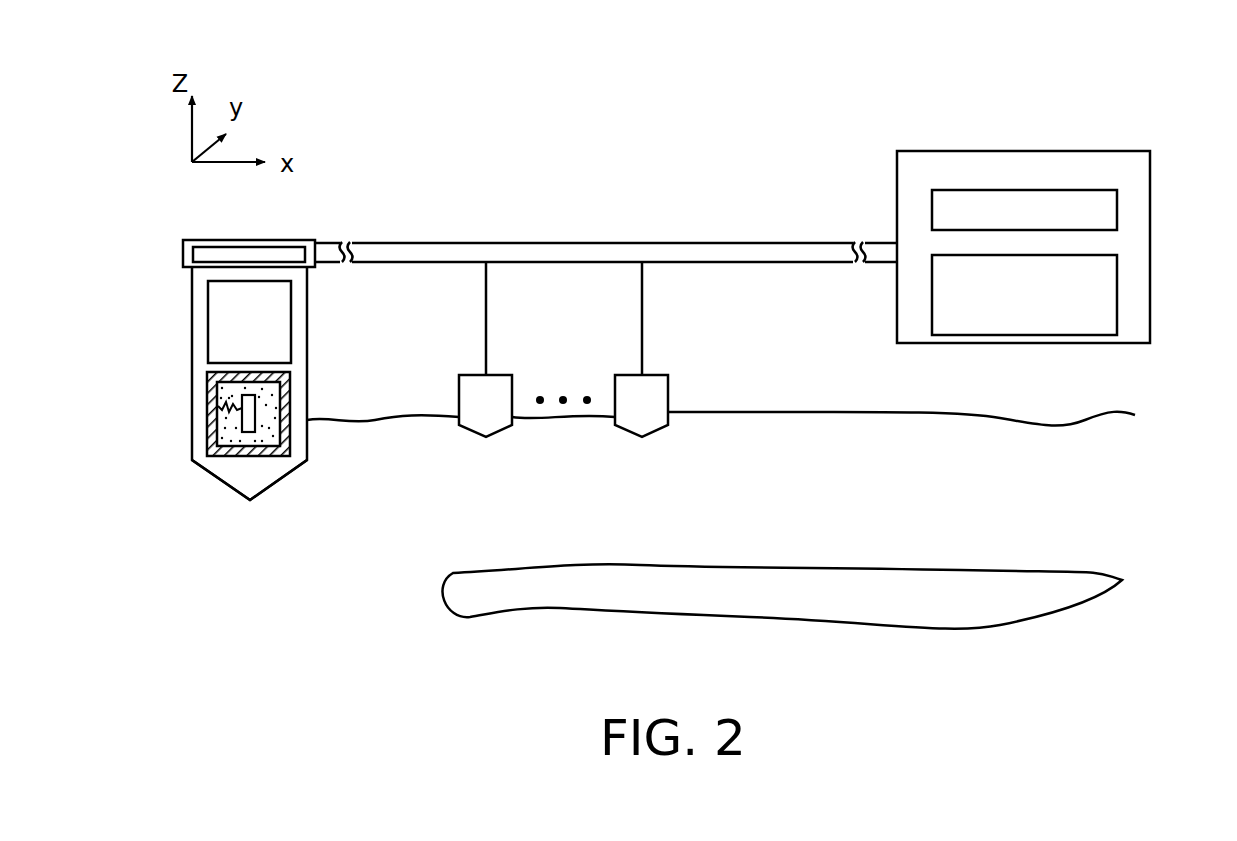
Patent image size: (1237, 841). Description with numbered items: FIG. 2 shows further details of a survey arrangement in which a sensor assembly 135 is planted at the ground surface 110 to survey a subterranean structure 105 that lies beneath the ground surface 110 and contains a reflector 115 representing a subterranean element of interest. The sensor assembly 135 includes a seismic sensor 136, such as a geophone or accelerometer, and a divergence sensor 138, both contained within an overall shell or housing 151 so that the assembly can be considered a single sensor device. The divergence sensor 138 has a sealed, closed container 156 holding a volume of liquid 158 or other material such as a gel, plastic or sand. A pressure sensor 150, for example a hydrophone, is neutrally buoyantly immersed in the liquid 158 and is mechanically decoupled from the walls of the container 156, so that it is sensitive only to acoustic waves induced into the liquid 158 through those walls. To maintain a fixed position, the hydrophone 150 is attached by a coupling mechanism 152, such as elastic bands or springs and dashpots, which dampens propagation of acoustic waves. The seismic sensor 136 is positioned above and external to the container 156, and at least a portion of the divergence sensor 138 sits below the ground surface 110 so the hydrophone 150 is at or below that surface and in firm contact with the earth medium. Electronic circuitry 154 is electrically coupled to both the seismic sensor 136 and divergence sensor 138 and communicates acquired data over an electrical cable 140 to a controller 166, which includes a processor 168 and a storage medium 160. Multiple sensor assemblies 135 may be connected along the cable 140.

The subterranean structure 105 is at (1147, 405).
The ground surface 110 is at (795, 412).
The reflector 115 is at (708, 604).
The sensor assembly 135 is at (180, 313).
The seismic sensor 136 is at (282, 315).
The divergence sensor 138 is at (300, 443).
The electrical cable 140 is at (600, 243).
The pressure sensor 150 is at (248, 432).
The housing 151 is at (198, 430).
The coupling mechanism 152 is at (220, 406).
The electronic circuitry 154 is at (252, 246).
The container 156 is at (292, 392).
The liquid 158 is at (265, 438).
The storage medium 160 is at (1117, 293).
The controller 166 is at (1058, 213).
The processor 168 is at (1117, 208).